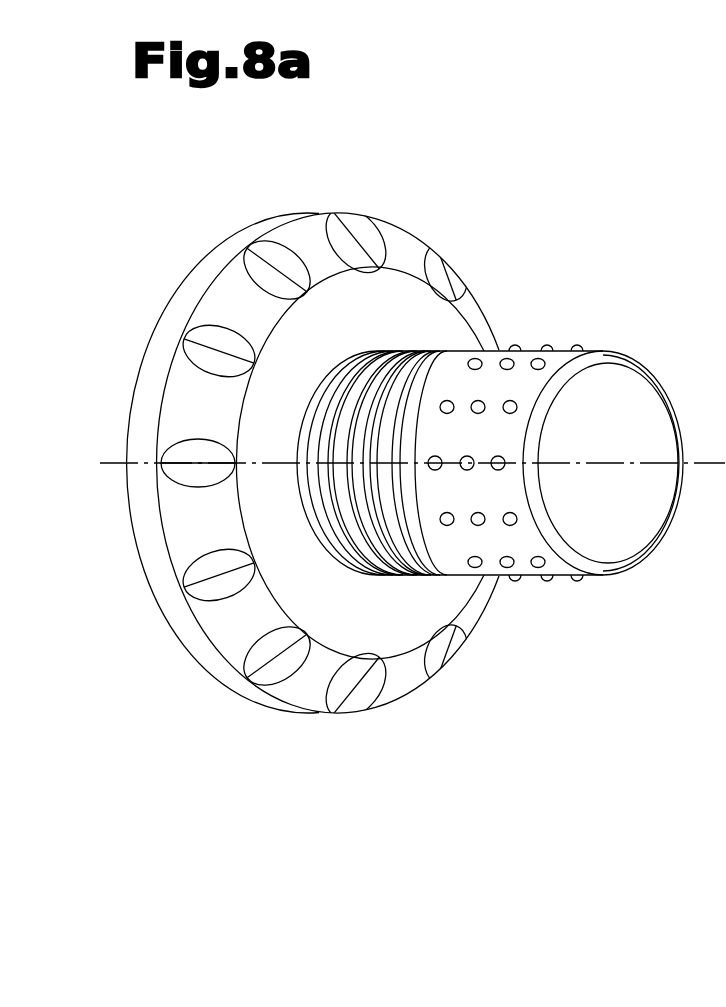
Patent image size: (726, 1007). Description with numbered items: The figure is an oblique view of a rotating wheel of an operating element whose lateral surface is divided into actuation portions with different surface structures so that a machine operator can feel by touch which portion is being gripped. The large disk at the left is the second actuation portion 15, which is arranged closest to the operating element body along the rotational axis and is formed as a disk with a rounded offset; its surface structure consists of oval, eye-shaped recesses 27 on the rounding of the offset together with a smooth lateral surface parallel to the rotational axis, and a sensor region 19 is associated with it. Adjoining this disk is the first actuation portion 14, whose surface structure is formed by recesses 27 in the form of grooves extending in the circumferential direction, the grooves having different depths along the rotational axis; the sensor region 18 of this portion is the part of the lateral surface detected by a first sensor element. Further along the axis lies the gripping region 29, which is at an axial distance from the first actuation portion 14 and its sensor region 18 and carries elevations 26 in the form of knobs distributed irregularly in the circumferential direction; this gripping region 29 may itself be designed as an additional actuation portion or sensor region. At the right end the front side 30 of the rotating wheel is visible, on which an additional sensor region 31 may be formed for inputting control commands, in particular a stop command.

The first actuation portion 14 is at (360, 562).
The sensor region 18 is at (398, 603).
The second actuation portion 15 is at (323, 381).
The sensor region 19 is at (382, 197).
The elevations 26 is at (578, 344).
The recesses 27 is at (435, 352).
The gripping region 29 is at (535, 605).
The front side 30 is at (603, 528).
The additional sensor region 31 is at (598, 517).